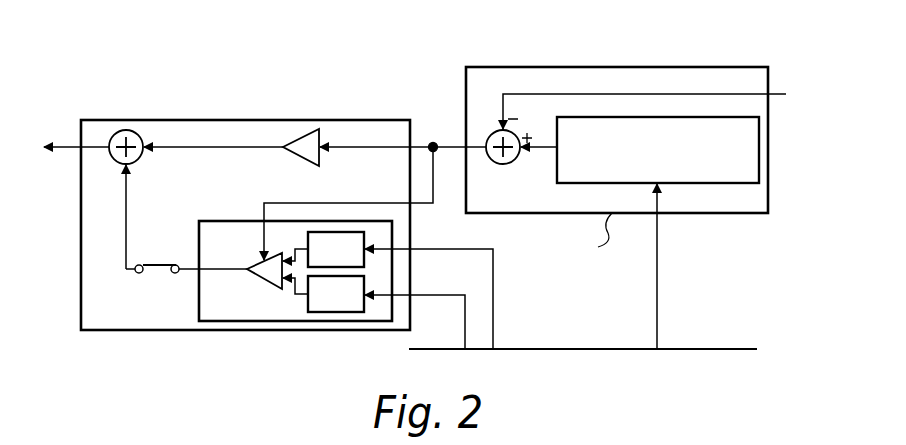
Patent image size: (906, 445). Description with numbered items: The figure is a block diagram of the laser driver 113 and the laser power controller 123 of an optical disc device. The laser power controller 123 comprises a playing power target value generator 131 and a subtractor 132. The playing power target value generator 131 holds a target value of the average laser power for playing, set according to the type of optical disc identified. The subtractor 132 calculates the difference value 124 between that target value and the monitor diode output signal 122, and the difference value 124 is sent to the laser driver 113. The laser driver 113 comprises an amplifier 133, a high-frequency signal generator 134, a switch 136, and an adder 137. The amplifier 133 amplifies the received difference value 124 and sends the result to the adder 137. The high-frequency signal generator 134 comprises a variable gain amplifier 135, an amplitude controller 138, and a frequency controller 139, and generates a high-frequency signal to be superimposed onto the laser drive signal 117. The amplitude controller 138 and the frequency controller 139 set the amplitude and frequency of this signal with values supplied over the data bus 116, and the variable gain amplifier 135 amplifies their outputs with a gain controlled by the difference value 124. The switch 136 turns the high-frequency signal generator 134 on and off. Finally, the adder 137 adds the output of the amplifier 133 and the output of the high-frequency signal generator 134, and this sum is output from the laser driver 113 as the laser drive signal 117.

The laser driver 113 is at (150, 330).
The data bus 116 is at (575, 350).
The laser drive signal 117 is at (72, 146).
The monitor diode output signal 122 is at (775, 94).
The laser power controller 123 is at (601, 238).
The difference value 124 is at (433, 140).
The playing power target value generator 131 is at (695, 184).
The subtractor 132 is at (494, 131).
The amplifier 133 is at (319, 131).
The high-frequency signal generator 134 is at (277, 330).
The variable gain amplifier 135 is at (255, 272).
The switch 136 is at (160, 272).
The adder 137 is at (129, 130).
The amplitude controller 138 is at (365, 240).
The frequency controller 139 is at (335, 313).